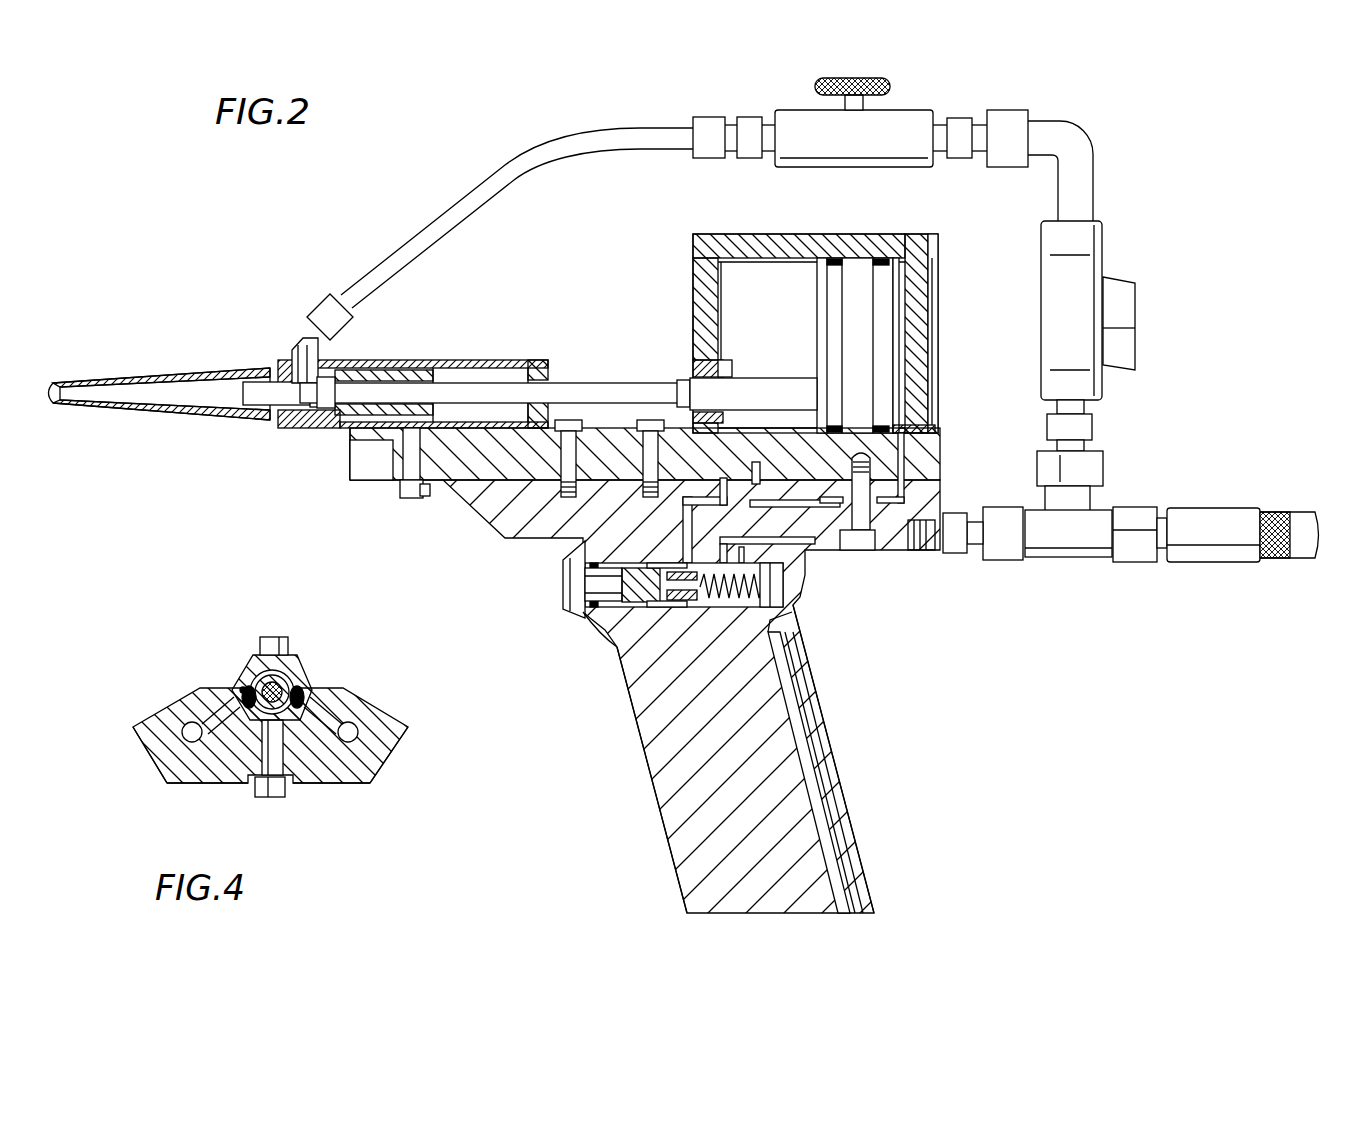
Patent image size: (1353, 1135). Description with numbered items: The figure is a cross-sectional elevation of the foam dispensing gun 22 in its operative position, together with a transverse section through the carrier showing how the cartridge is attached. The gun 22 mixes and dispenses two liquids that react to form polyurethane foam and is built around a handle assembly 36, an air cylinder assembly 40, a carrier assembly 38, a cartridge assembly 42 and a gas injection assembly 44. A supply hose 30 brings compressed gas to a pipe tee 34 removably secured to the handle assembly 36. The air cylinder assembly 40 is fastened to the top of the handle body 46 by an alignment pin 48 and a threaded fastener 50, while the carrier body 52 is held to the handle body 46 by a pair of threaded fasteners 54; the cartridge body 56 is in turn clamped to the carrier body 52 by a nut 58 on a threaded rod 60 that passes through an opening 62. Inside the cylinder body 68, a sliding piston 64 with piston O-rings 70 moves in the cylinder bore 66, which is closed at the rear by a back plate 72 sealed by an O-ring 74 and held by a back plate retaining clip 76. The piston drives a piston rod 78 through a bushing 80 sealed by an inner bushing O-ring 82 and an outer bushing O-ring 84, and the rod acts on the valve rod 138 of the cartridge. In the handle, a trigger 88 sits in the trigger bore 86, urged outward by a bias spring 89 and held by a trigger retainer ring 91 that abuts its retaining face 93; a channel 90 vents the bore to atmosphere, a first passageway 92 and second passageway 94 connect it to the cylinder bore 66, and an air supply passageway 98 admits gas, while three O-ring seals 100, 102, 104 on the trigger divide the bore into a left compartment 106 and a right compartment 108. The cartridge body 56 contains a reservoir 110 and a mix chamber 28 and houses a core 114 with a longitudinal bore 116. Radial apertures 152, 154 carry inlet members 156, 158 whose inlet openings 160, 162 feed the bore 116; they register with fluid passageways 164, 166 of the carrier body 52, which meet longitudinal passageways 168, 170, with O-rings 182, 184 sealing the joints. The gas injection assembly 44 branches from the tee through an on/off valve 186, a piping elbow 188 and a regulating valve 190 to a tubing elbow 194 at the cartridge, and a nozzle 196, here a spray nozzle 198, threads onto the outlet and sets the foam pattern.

In FIG. 2, the foam dispensing gun 22 is at (1170, 262).
In FIG. 2, the mix chamber 28 is at (380, 360).
In FIG. 2, the supply hose 30 is at (1280, 512).
In FIG. 2, the pipe tee 34 is at (1058, 560).
In FIG. 2, the handle assembly 36 is at (612, 665).
In FIG. 2, the carrier assembly 38 is at (350, 438).
In FIG. 4, the carrier assembly 38 is at (145, 725).
In FIG. 2, the air cylinder assembly 40 is at (690, 256).
In FIG. 2, the cartridge assembly 42 is at (540, 362).
In FIG. 4, the cartridge assembly 42 is at (252, 674).
In FIG. 2, the gas injection assembly 44 is at (492, 170).
In FIG. 2, the handle body 46 is at (540, 552).
In FIG. 2, the alignment pin 48 is at (760, 470).
In FIG. 2, the threaded fastener 50 is at (858, 551).
In FIG. 2, the carrier body 52 is at (350, 470).
In FIG. 4, the carrier body 52 is at (150, 770).
In FIG. 2, the threaded fasteners 54 is at (645, 425).
In FIG. 2, the cartridge body 56 is at (430, 360).
In FIG. 4, the cartridge body 56 is at (288, 672).
In FIG. 2, the nut 58 is at (405, 490).
In FIG. 4, the nut 58 is at (258, 790).
In FIG. 2, the threaded rod 60 is at (400, 480).
In FIG. 4, the threaded rod 60 is at (280, 762).
In FIG. 2, the opening 62 is at (425, 497).
In FIG. 2, the sliding piston 64 is at (862, 262).
In FIG. 2, the cylinder bore 66 is at (735, 265).
In FIG. 2, the cylinder body 68 is at (690, 245).
In FIG. 2, the piston O-rings 70 is at (828, 262).
In FIG. 2, the back plate 72 is at (925, 285).
In FIG. 2, the O-ring 74 is at (935, 237).
In FIG. 2, the back plate retaining clip 76 is at (935, 430).
In FIG. 2, the piston rod 78 is at (775, 376).
In FIG. 2, the bushing 80 is at (700, 365).
In FIG. 2, the inner bushing O-ring 82 is at (693, 375).
In FIG. 2, the outer bushing O-ring 84 is at (705, 355).
In FIG. 2, the trigger bore 86 is at (600, 610).
In FIG. 2, the trigger 88 is at (562, 585).
In FIG. 2, the bias spring 89 is at (790, 625).
In FIG. 2, the channel 90 is at (815, 770).
In FIG. 2, the trigger retainer ring 91 is at (565, 612).
In FIG. 2, the first passageway 92 is at (905, 500).
In FIG. 2, the retaining face 93 is at (583, 550).
In FIG. 2, the second passageway 94 is at (745, 551).
In FIG. 2, the air supply passageway 98 is at (920, 548).
In FIG. 2, the O-ring seal 100 is at (590, 640).
In FIG. 2, the O-ring seal 102 is at (700, 608).
In FIG. 2, the O-ring seal 104 is at (735, 608).
In FIG. 2, the left compartment 106 is at (667, 572).
In FIG. 2, the right compartment 108 is at (780, 605).
In FIG. 2, the reservoir 110 is at (480, 360).
In FIG. 2, the core 114 is at (405, 372).
In FIG. 4, the core 114 is at (284, 688).
In FIG. 2, the longitudinal bore 116 is at (285, 422).
In FIG. 2, the valve rod 138 is at (585, 383).
In FIG. 4, the aperture 152 is at (250, 682).
In FIG. 4, the aperture 154 is at (302, 688).
In FIG. 4, the inlet member 156 is at (190, 783).
In FIG. 4, the inlet member 158 is at (340, 783).
In FIG. 4, the inlet opening 160 is at (255, 660).
In FIG. 2, the inlet opening 162 is at (350, 452).
In FIG. 4, the inlet opening 162 is at (273, 637).
In FIG. 4, the fluid passageway 164 is at (215, 715).
In FIG. 4, the fluid passageway 166 is at (358, 730).
In FIG. 4, the longitudinal passageway 168 is at (182, 734).
In FIG. 4, the longitudinal passageway 170 is at (390, 760).
In FIG. 4, the O-ring 182 is at (240, 690).
In FIG. 4, the O-ring 184 is at (330, 715).
In FIG. 2, the on/off valve 186 is at (1105, 245).
In FIG. 2, the piping elbow 188 is at (1088, 125).
In FIG. 2, the regulating valve 190 is at (905, 115).
In FIG. 2, the tubing elbow 194 is at (295, 345).
In FIG. 2, the nozzle 196 is at (210, 368).
In FIG. 2, the spray nozzle 198 is at (160, 383).